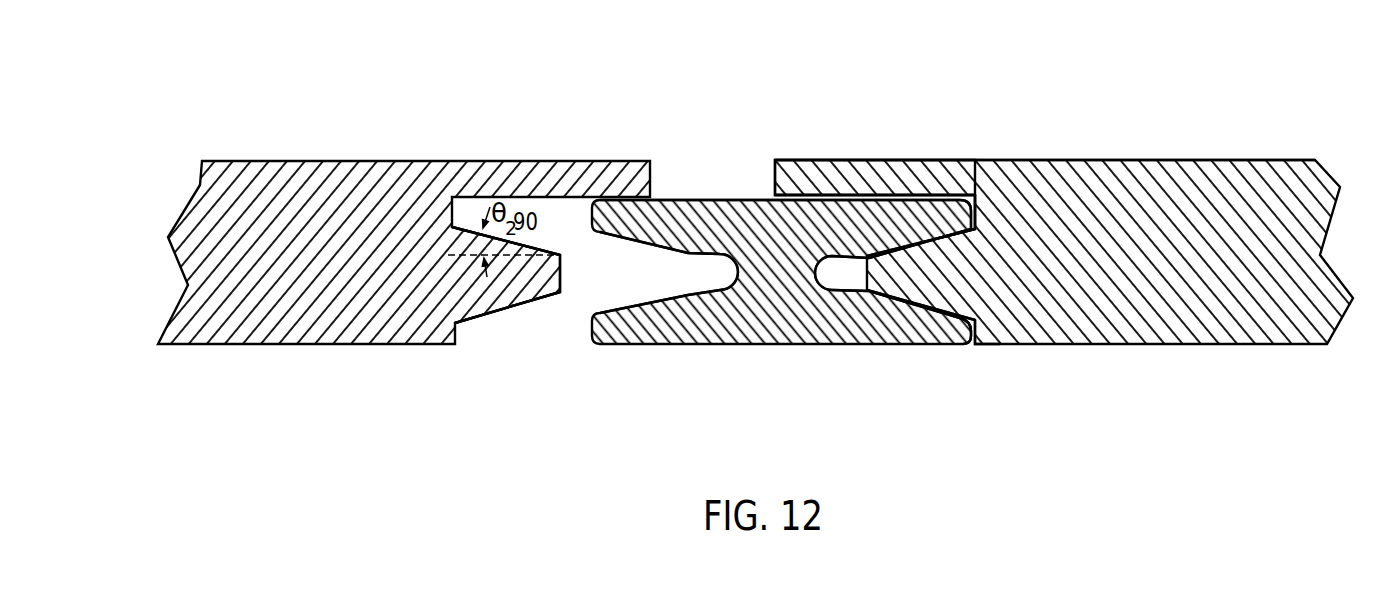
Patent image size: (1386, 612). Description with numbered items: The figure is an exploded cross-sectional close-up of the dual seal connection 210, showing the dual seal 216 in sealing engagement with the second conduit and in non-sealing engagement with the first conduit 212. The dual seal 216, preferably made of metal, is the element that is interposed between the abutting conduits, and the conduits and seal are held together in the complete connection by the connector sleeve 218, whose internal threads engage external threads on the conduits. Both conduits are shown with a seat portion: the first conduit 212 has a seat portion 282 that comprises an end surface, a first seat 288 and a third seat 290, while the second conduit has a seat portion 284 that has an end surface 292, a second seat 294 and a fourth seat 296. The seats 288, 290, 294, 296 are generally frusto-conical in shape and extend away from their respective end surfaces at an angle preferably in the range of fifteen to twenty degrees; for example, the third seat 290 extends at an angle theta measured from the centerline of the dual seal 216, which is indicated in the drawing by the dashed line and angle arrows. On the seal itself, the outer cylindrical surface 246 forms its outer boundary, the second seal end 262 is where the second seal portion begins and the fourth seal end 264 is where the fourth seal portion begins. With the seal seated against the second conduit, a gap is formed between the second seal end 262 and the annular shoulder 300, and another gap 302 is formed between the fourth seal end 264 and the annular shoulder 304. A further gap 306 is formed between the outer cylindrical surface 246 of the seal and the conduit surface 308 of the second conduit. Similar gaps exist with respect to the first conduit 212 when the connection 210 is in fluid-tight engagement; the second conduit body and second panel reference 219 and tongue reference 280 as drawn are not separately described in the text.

The dual seal connection 210 is at (655, 159).
The first conduit 212 is at (404, 230).
The dual seal 216 is at (781, 245).
The connector sleeve 218 is at (952, 333).
The second panel member 219 is at (1045, 142).
The outer cylindrical surface 246 is at (900, 207).
The second seal end 262 is at (950, 343).
The fourth seal end 264 is at (955, 200).
The tongue 280 is at (536, 275).
The seat portion 282 is at (552, 325).
The seat portion 284 is at (1064, 281).
The first seat 288 is at (501, 343).
The third seat 290 is at (545, 193).
The end surface 292 is at (818, 326).
The second seat 294 is at (919, 305).
The fourth seat 296 is at (940, 255).
The annular shoulder 300 is at (995, 344).
The gap 302 is at (1008, 160).
The annular shoulder 304 is at (1001, 184).
The gap 306 is at (875, 163).
The conduit surface 308 is at (875, 147).